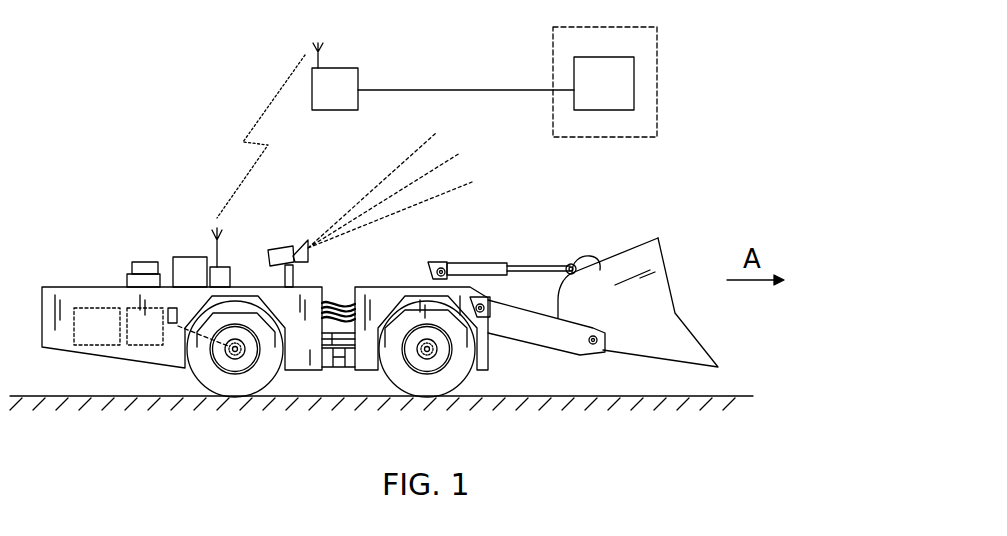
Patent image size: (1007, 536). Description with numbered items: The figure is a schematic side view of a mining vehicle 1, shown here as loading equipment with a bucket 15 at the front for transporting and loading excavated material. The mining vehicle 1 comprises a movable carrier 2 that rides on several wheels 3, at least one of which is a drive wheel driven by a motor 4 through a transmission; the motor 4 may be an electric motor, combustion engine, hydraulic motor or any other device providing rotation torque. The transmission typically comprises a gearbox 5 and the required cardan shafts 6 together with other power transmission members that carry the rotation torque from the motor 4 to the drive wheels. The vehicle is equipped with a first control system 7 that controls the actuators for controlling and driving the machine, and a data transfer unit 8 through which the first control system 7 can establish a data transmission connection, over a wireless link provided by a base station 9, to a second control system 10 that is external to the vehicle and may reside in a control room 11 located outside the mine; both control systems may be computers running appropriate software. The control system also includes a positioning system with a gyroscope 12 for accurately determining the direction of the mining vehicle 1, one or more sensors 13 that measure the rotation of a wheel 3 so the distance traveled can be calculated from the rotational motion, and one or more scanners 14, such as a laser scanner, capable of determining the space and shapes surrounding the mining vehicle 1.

The mining vehicle 1 is at (170, 171).
The movable carrier 2 is at (377, 293).
The wheels 3 is at (223, 383).
The motor 4 is at (87, 308).
The gearbox 5 is at (133, 347).
The cardan shafts 6 is at (198, 347).
The first control system 7 is at (190, 258).
The data transfer unit 8 is at (225, 267).
The base station 9 is at (345, 104).
The second control system 10 is at (620, 97).
The control room 11 is at (615, 43).
The gyroscope 12 is at (130, 265).
The sensors 13 is at (173, 326).
The scanners 14 is at (282, 250).
The bucket 15 is at (645, 262).